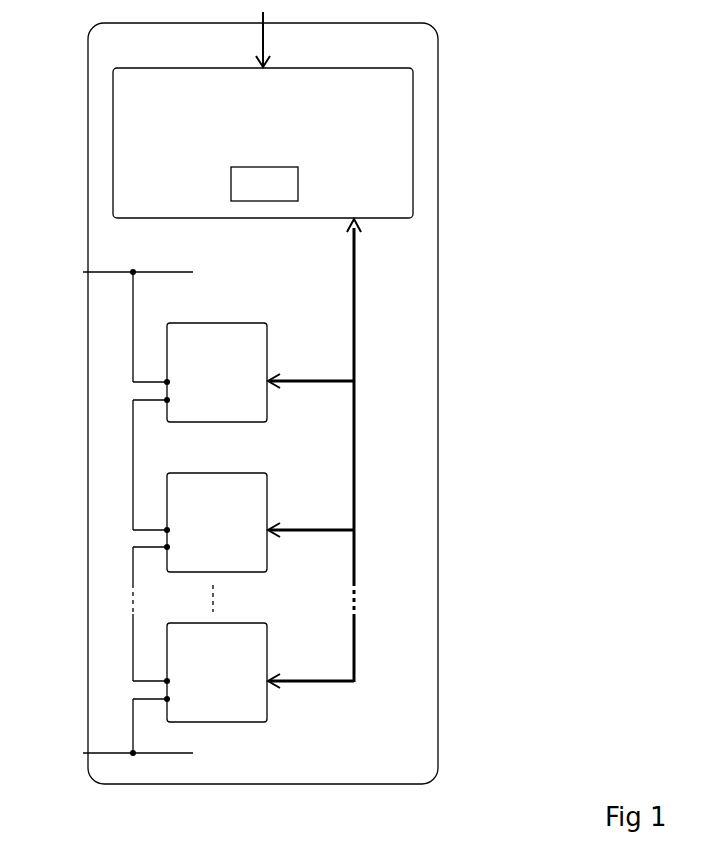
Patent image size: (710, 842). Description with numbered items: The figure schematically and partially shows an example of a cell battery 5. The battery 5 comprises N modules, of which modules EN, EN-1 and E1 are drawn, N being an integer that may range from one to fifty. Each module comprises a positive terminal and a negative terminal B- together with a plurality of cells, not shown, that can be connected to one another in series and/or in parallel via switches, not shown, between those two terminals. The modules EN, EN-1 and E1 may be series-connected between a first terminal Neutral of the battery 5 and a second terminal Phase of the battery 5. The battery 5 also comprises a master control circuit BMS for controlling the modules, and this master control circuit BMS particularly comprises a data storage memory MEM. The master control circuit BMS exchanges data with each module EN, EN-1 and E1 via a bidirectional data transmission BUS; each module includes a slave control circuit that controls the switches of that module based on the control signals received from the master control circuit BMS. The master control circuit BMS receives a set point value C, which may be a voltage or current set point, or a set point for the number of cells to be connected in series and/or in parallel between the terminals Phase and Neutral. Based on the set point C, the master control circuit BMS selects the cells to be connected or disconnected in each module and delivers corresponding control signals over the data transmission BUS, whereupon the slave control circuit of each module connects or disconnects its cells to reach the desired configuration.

The battery 5 is at (492, 86).
The master control circuit BMS is at (356, 68).
The set point value C is at (258, 46).
The data storage memory MEM is at (298, 184).
The bidirectional data transmission bus BUS is at (356, 292).
The second terminal Phase is at (97, 271).
The first terminal Neutral is at (89, 756).
The module EN is at (267, 418).
The module EN-1 is at (267, 568).
The module E1 is at (267, 720).
The negative terminal B- is at (165, 702).